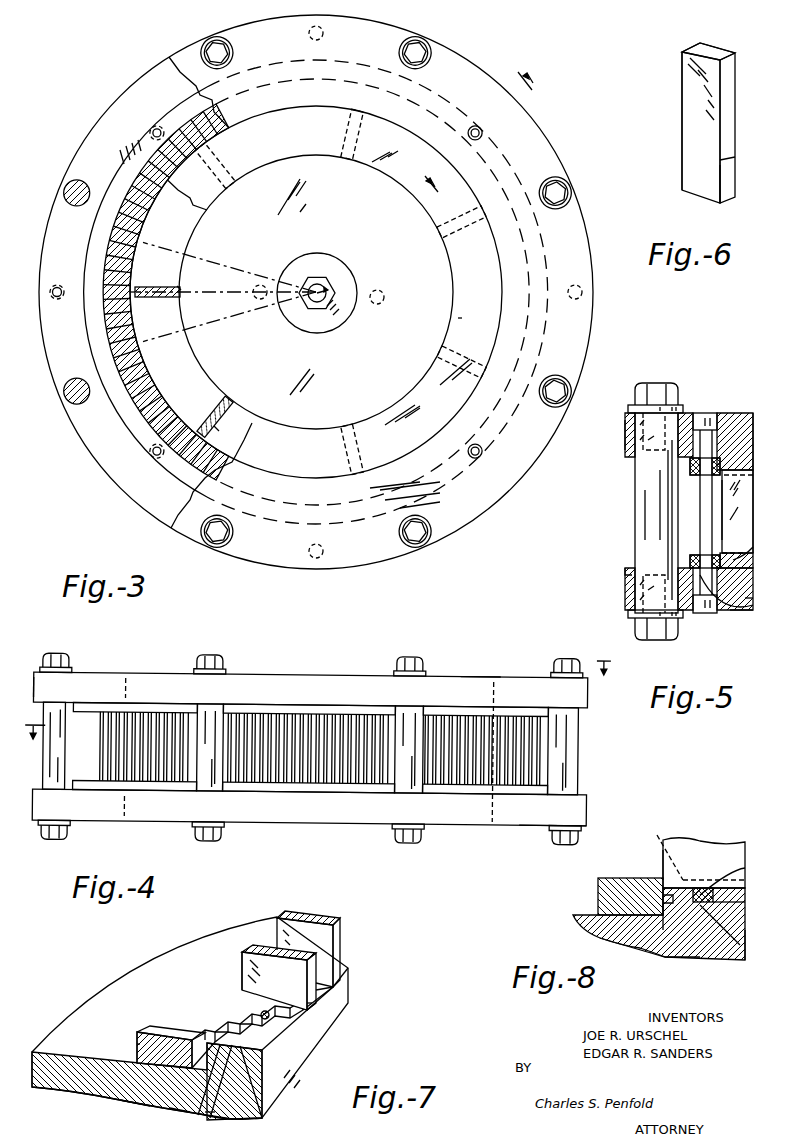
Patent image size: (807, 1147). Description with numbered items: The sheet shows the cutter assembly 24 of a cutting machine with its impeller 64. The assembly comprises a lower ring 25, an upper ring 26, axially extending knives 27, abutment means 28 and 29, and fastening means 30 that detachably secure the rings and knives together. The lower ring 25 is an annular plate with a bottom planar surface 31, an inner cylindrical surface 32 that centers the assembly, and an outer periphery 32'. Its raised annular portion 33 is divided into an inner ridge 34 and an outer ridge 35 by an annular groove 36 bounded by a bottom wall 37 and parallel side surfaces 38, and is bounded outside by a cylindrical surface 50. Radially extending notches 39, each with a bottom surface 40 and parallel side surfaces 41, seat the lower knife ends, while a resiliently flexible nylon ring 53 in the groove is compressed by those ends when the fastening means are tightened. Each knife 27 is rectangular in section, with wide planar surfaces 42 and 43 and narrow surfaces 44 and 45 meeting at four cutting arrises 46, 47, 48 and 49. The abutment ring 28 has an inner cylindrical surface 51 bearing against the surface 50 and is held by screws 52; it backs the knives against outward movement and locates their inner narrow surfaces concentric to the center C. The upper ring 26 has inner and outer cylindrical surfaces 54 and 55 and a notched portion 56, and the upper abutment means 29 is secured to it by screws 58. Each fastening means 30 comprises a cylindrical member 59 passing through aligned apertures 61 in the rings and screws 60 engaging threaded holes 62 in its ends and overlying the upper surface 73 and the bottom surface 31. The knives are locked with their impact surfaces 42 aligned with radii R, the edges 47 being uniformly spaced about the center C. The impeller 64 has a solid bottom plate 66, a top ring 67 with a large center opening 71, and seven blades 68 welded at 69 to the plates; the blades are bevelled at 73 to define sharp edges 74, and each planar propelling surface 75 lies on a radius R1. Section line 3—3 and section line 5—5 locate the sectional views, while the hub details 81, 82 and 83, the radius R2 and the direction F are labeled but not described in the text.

In FIG. 3, the cutting head assembly 24 is at (106, 116).
In FIG. 4, the cutting head assembly 24 is at (80, 676).
In FIG. 5, the cutting head assembly 24 is at (628, 396).
In FIG. 3, the lower ring 25 is at (140, 85).
In FIG. 4, the lower ring 25 is at (587, 800).
In FIG. 5, the lower ring 25 is at (625, 590).
In FIG. 8, the lower ring 25 is at (590, 926).
In FIG. 7, the lower ring 25 is at (82, 1022).
In FIG. 3, the upper ring 26 is at (545, 142).
In FIG. 4, the upper ring 26 is at (588, 696).
In FIG. 5, the upper ring 26 is at (625, 444).
In FIG. 3, the knives 27 is at (113, 205).
In FIG. 4, the knives 27 is at (368, 778).
In FIG. 5, the knives 27 is at (752, 515).
In FIG. 6, the knives 27 is at (710, 114).
In FIG. 8, the knives 27 is at (706, 846).
In FIG. 7, the knives 27 is at (282, 948).
In FIG. 3, the abutment means 28 is at (92, 322).
In FIG. 4, the abutment means 28 is at (80, 785).
In FIG. 5, the abutment means 28 is at (692, 555).
In FIG. 8, the abutment means 28 is at (598, 894).
In FIG. 7, the abutment means 28 is at (158, 1030).
In FIG. 4, the upper abutment means 29 is at (80, 712).
In FIG. 5, the upper abutment means 29 is at (690, 476).
In FIG. 3, the fastening means 30 is at (426, 54).
In FIG. 4, the fastening means 30 is at (224, 663).
In FIG. 5, the fastening means 30 is at (650, 388).
In FIG. 4, the bottom planar surface 31 is at (530, 825).
In FIG. 5, the bottom planar surface 31 is at (740, 620).
In FIG. 4, the inner cylindrical surface 32 is at (306, 808).
In FIG. 5, the inner cylindrical surface 32 is at (762, 596).
In FIG. 8, the inner cylindrical surface 32 is at (759, 949).
In FIG. 7, the inner cylindrical surface 32 is at (347, 998).
In FIG. 3, the outer cylindrical surface 32' is at (105, 326).
In FIG. 4, the outer cylindrical surface 32' is at (588, 820).
In FIG. 5, the outer cylindrical surface 32' is at (613, 573).
In FIG. 5, the raised annular portion 33 is at (753, 577).
In FIG. 8, the raised annular portion 33 is at (746, 925).
In FIG. 7, the raised annular portion 33 is at (265, 1105).
In FIG. 8, the inner annular ridge 34 is at (720, 903).
In FIG. 7, the inner annular ridge 34 is at (258, 1060).
In FIG. 8, the outer annular ridge 35 is at (660, 892).
In FIG. 7, the outer annular ridge 35 is at (137, 1044).
In FIG. 8, the annular groove 36 is at (665, 958).
In FIG. 7, the annular groove 36 is at (210, 1112).
In FIG. 8, the bottom wall 37 is at (740, 945).
In FIG. 7, the bottom wall 37 is at (262, 1098).
In FIG. 8, the side surfaces 38 is at (668, 872).
In FIG. 7, the side surfaces 38 is at (200, 1112).
In FIG. 5, the notches 39 is at (748, 554).
In FIG. 8, the notches 39 is at (657, 840).
In FIG. 7, the notches 39 is at (312, 1003).
In FIG. 7, the bottom surface 40 is at (224, 1012).
In FIG. 7, the side surfaces 41 is at (238, 1010).
In FIG. 6, the planar surface 42 is at (690, 74).
In FIG. 8, the planar surface 42 is at (696, 826).
In FIG. 7, the planar surface 42 is at (242, 958).
In FIG. 5, the planar surface 43 is at (747, 500).
In FIG. 6, the planar surface 43 is at (728, 52).
In FIG. 6, the narrow surface 44 is at (734, 78).
In FIG. 7, the narrow surface 44 is at (318, 958).
In FIG. 6, the narrow surface 45 is at (688, 50).
In FIG. 7, the narrow surface 45 is at (250, 947).
In FIG. 6, the corner cutting edge 46 is at (682, 165).
In FIG. 7, the corner cutting edge 46 is at (242, 972).
In FIG. 6, the corner cutting edge 47 is at (735, 157).
In FIG. 7, the corner cutting edge 47 is at (306, 976).
In FIG. 6, the corner cutting edge 48 is at (736, 182).
In FIG. 6, the corner cutting edge 49 is at (700, 44).
In FIG. 8, the outer cylindrical surface 50 is at (665, 950).
In FIG. 7, the outer cylindrical surface 50 is at (178, 1110).
In FIG. 5, the inner cylindrical surface 51 is at (753, 610).
In FIG. 8, the inner cylindrical surface 51 is at (640, 945).
In FIG. 7, the inner cylindrical surface 51 is at (136, 1106).
In FIG. 3, the screws 52 is at (152, 127).
In FIG. 5, the screws 52 is at (706, 613).
In FIG. 5, the resiliently flexible means 53 is at (752, 545).
In FIG. 8, the resiliently flexible means 53 is at (745, 870).
In FIG. 7, the resiliently flexible means 53 is at (268, 1012).
In FIG. 4, the inner cylindrical surface 54 is at (130, 689).
In FIG. 5, the inner cylindrical surface 54 is at (753, 440).
In FIG. 4, the outer cylindrical surface 55 is at (34, 685).
In FIG. 5, the outer cylindrical surface 55 is at (625, 427).
In FIG. 5, the portion 56 is at (745, 470).
In FIG. 3, the screws 58 is at (483, 136).
In FIG. 5, the screws 58 is at (710, 413).
In FIG. 4, the cylindrical member 59 is at (580, 744).
In FIG. 5, the cylindrical member 59 is at (636, 487).
In FIG. 5, the screws 60 is at (672, 392).
In FIG. 5, the apertures 61 is at (630, 410).
In FIG. 5, the threaded holes 62 is at (640, 455).
In FIG. 3, the impeller 64 is at (462, 318).
In FIG. 3, the bottom plate 66 is at (296, 282).
In FIG. 3, the top plate 67 is at (458, 291).
In FIG. 3, the blades 68 is at (231, 160).
In FIG. 3, the welds 69 is at (222, 416).
In FIG. 3, the center opening 71 is at (393, 420).
In FIG. 3, the upper surface 73 is at (140, 297).
In FIG. 4, the upper surface 73 is at (476, 678).
In FIG. 5, the upper surface 73 is at (745, 413).
In FIG. 3, the sharp edges 74 is at (165, 287).
In FIG. 3, the propelling surface 75 is at (180, 287).
In FIG. 3, the hub 81 is at (341, 268).
In FIG. 3, the shaft nut 82 is at (318, 308).
In FIG. 3, the hub bolt hole 83 is at (379, 305).
In FIG. 3, the radii R is at (198, 262).
In FIG. 3, the radius R1 is at (248, 292).
In FIG. 3, the radius line R2 is at (250, 316).
In FIG. 3, the center C is at (328, 287).
In FIG. 4, the force direction F is at (179, 661).
In FIG. 4, the section line 3 is at (317, 698).
In FIG. 3, the section line 5 is at (485, 135).